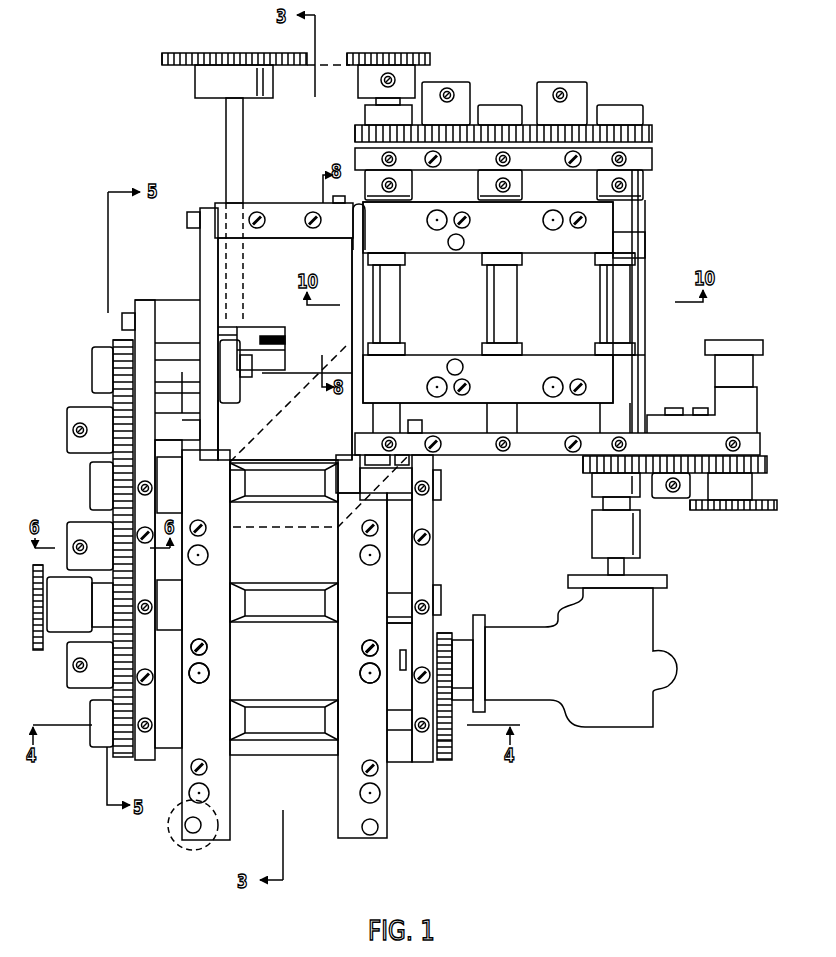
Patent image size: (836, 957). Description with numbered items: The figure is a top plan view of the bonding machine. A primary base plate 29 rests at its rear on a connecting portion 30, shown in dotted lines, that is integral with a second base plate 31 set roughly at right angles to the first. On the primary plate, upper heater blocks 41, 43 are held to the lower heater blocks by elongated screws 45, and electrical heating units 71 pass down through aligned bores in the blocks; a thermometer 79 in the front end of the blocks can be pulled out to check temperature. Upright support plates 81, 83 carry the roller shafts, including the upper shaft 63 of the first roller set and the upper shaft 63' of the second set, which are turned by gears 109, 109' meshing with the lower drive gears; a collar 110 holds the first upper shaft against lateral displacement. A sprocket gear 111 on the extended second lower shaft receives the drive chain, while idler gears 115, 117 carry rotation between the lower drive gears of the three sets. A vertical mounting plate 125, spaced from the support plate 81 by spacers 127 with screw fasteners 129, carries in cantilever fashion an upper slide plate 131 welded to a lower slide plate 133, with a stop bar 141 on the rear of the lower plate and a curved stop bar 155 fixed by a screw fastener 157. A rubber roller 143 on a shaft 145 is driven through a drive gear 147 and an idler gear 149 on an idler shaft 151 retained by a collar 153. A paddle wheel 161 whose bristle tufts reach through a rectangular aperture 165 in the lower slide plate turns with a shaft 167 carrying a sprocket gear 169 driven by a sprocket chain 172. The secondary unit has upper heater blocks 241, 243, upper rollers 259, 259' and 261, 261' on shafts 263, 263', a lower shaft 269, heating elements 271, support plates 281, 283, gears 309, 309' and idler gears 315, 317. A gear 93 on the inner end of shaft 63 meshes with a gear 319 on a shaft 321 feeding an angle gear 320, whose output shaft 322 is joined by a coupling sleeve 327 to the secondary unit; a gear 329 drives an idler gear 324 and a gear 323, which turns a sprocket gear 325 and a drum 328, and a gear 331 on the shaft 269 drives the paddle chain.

The base plate 29 is at (284, 607).
The connecting portion 30 is at (282, 412).
The base plate 31 is at (488, 302).
The upper heater block 41 is at (227, 786).
The upper heater block 43 is at (345, 777).
The screws 45 is at (199, 639).
The shaft 63 is at (284, 720).
The shaft 63' is at (284, 602).
The heating units 71 is at (200, 684).
The thermometer 79 is at (170, 836).
The support plate 81 is at (153, 664).
The support plate 83 is at (428, 549).
The gear 93 is at (447, 760).
The gear 109 is at (83, 745).
The gear 109' is at (80, 604).
The collar 110 is at (167, 582).
The sprocket gear 111 is at (40, 620).
The idler gear 115 is at (95, 689).
The idler gear 117 is at (95, 523).
The mounting plate 125 is at (200, 259).
The spacers 127 is at (171, 308).
The screw fastener 129 is at (122, 322).
The upper slide plate 131 is at (235, 430).
The lower slide plate 133 is at (285, 349).
The stop bar 141 is at (265, 203).
The rubber roller 143 is at (240, 399).
The shaft 145 is at (177, 378).
The drive gear 147 is at (112, 346).
The idler gear 149 is at (98, 417).
The idler shaft 151 is at (177, 438).
The collar 153 is at (88, 398).
The stop bar 155 is at (352, 320).
The screw fastener 157 is at (335, 203).
The paddle wheel 161 is at (255, 327).
The rectangular aperture 165 is at (289, 322).
The shaft 167 is at (243, 145).
The sprocket gear 169 is at (209, 53).
The sprocket chain 172 is at (338, 50).
The upper heater block 241 is at (565, 255).
The upper heater block 243 is at (551, 358).
The upper roller 259 is at (407, 267).
The upper roller 259' is at (487, 271).
The upper roller 261 is at (403, 339).
The upper roller 261' is at (484, 341).
The shaft 263 is at (402, 304).
The shaft 263' is at (518, 304).
The shaft 269 is at (376, 101).
The heating elements 271 is at (427, 222).
The support plate 281 is at (652, 161).
The support plate 283 is at (546, 455).
The gear 309 is at (364, 120).
The gear 309' is at (502, 97).
The idler gear 315 is at (480, 102).
The idler gear 317 is at (587, 111).
The gear 319 is at (452, 633).
The angle gear 320 is at (645, 616).
The shaft 321 is at (405, 660).
The output shaft 322 is at (627, 569).
The gear 323 is at (762, 474).
The idler gear 324 is at (660, 500).
The sprocket gear 325 is at (757, 511).
The coupling sleeve 327 is at (592, 536).
The drum 328 is at (728, 343).
The gear 329 is at (592, 489).
The gear 331 is at (405, 53).